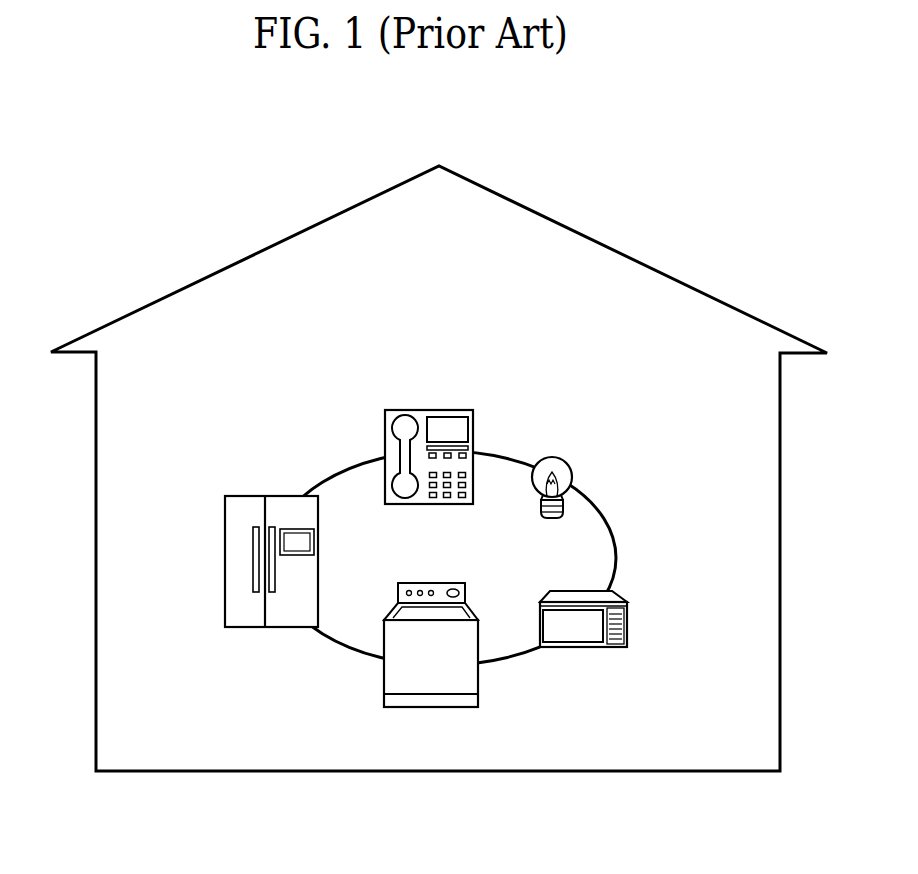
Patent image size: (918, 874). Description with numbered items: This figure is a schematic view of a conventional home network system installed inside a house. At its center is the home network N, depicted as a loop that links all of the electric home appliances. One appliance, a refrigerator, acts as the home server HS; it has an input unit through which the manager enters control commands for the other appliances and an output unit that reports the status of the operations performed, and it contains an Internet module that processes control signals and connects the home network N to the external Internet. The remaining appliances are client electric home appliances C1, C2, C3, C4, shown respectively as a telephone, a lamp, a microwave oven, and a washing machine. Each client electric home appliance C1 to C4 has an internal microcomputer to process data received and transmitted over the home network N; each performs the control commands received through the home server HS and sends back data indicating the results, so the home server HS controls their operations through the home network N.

The home server HS is at (262, 496).
The client electric home appliance C1 is at (425, 410).
The client electric home appliance C2 is at (551, 457).
The client electric home appliance C3 is at (627, 617).
The client electric home appliance C4 is at (478, 683).
The home network N is at (298, 638).